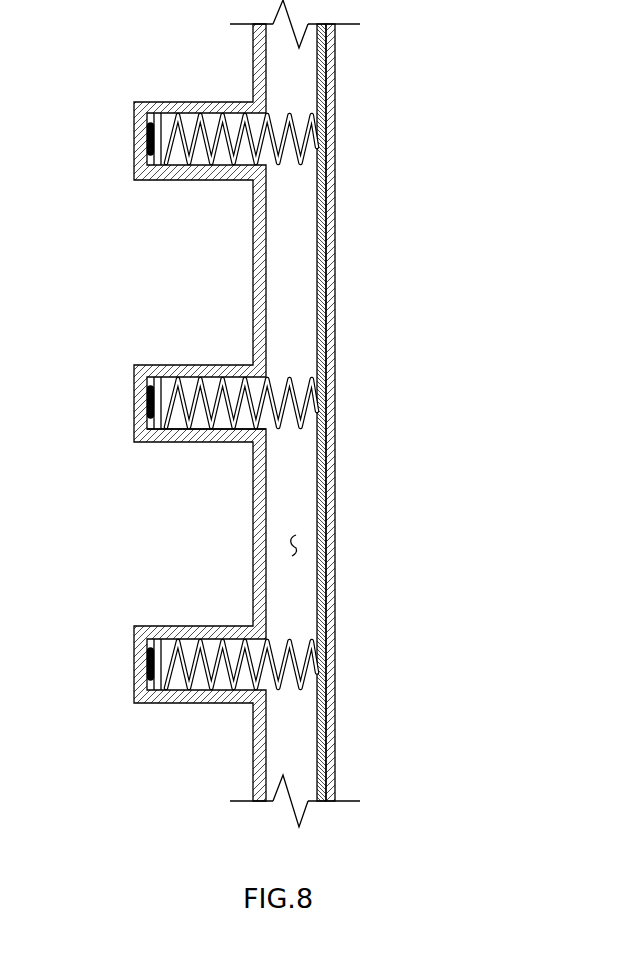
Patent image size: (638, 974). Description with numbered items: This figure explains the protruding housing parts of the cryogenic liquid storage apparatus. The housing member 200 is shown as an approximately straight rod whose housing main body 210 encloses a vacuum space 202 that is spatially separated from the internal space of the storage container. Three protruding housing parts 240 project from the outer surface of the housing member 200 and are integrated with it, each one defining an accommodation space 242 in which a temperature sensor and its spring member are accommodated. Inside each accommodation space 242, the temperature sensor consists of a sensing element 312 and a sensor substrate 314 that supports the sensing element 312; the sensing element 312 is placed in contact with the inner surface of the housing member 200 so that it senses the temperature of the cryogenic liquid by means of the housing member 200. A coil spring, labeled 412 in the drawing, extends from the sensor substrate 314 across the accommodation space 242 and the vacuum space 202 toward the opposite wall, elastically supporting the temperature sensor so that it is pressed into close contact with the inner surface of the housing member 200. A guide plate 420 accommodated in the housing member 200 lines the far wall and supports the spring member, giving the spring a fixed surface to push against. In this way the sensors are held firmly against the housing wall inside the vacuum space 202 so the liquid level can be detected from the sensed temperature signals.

The housing member 200 is at (346, 238).
The vacuum space 202 is at (296, 539).
The housing main body 210 is at (332, 313).
The protruding housing part 240 is at (134, 376).
The accommodation space 242 is at (173, 429).
The sensing element 312 is at (147, 401).
The sensor substrate 314 is at (158, 382).
The elastic member (spring) 412 is at (285, 404).
The guide plate 420 is at (322, 502).